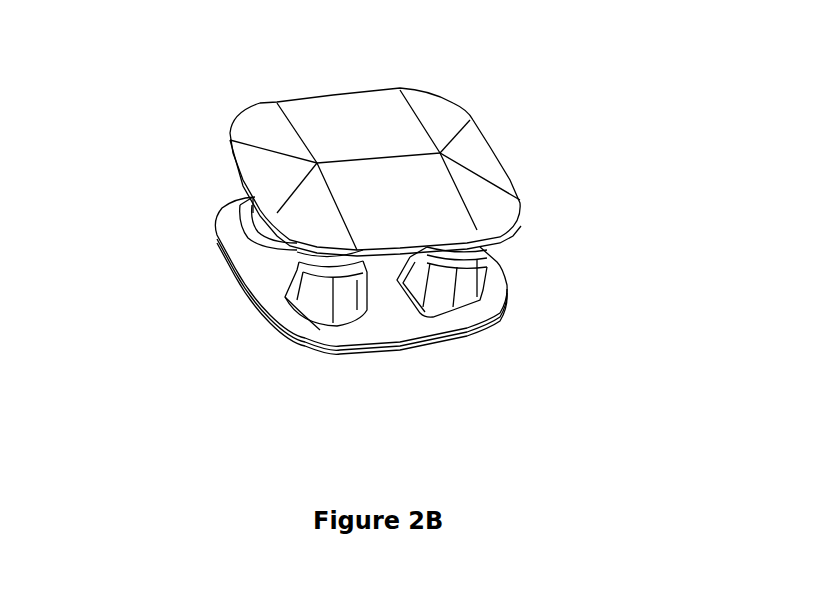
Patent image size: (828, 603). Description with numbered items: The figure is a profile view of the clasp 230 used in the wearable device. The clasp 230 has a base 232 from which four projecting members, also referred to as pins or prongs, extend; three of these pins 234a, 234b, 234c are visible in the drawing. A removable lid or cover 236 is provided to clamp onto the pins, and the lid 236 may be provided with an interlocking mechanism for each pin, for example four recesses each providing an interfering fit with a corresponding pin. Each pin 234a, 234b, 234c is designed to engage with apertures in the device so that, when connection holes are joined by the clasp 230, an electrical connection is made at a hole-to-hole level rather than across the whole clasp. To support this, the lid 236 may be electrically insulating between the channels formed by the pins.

The clasp 230 is at (153, 372).
The base 232 is at (510, 318).
The pin 234a is at (463, 278).
The pin 234b is at (311, 290).
The pin 234c is at (262, 216).
The lid 236 is at (437, 117).